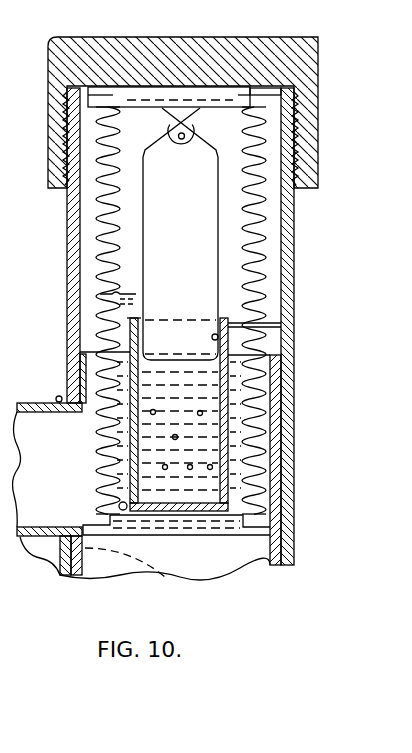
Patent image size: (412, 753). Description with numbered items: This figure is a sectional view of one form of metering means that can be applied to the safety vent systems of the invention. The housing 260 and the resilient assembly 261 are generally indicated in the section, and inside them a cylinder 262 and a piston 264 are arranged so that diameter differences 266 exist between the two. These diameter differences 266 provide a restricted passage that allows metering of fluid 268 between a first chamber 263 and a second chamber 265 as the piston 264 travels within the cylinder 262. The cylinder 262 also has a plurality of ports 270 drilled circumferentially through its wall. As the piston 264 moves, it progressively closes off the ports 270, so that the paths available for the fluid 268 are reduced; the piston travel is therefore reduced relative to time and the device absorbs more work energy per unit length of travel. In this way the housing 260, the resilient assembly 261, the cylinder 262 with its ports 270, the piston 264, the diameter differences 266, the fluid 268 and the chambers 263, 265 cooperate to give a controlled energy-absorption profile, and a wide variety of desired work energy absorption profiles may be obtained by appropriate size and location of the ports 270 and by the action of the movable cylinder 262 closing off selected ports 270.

The housing 260 is at (313, 252).
The resilient assembly 261 is at (219, 326).
The cylinder 262 is at (240, 414).
The chamber 263 is at (207, 402).
The piston 264 is at (140, 257).
The chamber 265 is at (310, 310).
The diameter differences 266 is at (230, 327).
The fluid 268 is at (125, 293).
The ports 270 is at (178, 438).